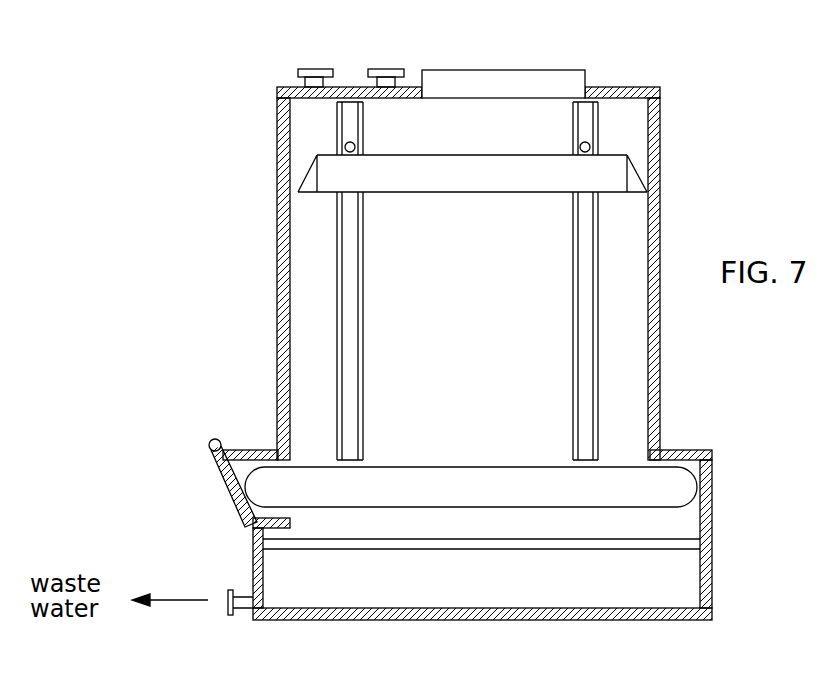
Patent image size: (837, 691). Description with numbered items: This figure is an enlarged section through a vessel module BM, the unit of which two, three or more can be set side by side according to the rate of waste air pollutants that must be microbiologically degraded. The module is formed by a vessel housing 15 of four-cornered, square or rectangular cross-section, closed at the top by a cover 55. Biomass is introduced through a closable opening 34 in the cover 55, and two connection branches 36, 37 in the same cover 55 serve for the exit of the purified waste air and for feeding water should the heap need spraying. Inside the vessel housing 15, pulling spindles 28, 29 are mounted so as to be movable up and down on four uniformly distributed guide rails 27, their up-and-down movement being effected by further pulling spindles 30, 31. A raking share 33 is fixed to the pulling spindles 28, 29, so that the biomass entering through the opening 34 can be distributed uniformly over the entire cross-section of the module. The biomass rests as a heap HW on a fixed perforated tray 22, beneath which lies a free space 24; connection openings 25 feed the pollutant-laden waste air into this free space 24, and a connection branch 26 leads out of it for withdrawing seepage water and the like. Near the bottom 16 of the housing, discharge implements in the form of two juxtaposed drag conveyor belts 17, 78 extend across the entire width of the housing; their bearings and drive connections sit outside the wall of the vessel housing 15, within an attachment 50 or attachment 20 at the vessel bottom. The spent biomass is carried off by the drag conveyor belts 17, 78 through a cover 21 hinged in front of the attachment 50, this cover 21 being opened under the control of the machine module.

The vessel module BM is at (477, 235).
The vessel housing 15 is at (282, 213).
The cover 55 is at (613, 92).
The closable opening 34 is at (527, 80).
The connection branch 36 is at (313, 68).
The connection branch 37 is at (384, 68).
The pulling spindle 30 is at (350, 273).
The pulling spindle 31 is at (585, 267).
The guide rails 27 is at (467, 281).
The pulling spindle 28 is at (356, 145).
The pulling spindle 29 is at (581, 143).
The raking share 33 is at (483, 183).
The heap HW is at (482, 327).
The attachment 50 is at (248, 449).
The attachment 20 is at (712, 450).
The drag conveyor belt 17 is at (471, 451).
The roller 78 is at (430, 460).
The cover 21 is at (225, 484).
The fixed perforated tray 22 is at (702, 546).
The free space 24 is at (683, 577).
The bottom 16 is at (662, 622).
The connection openings 25 is at (463, 622).
The connection branch 26 is at (240, 615).